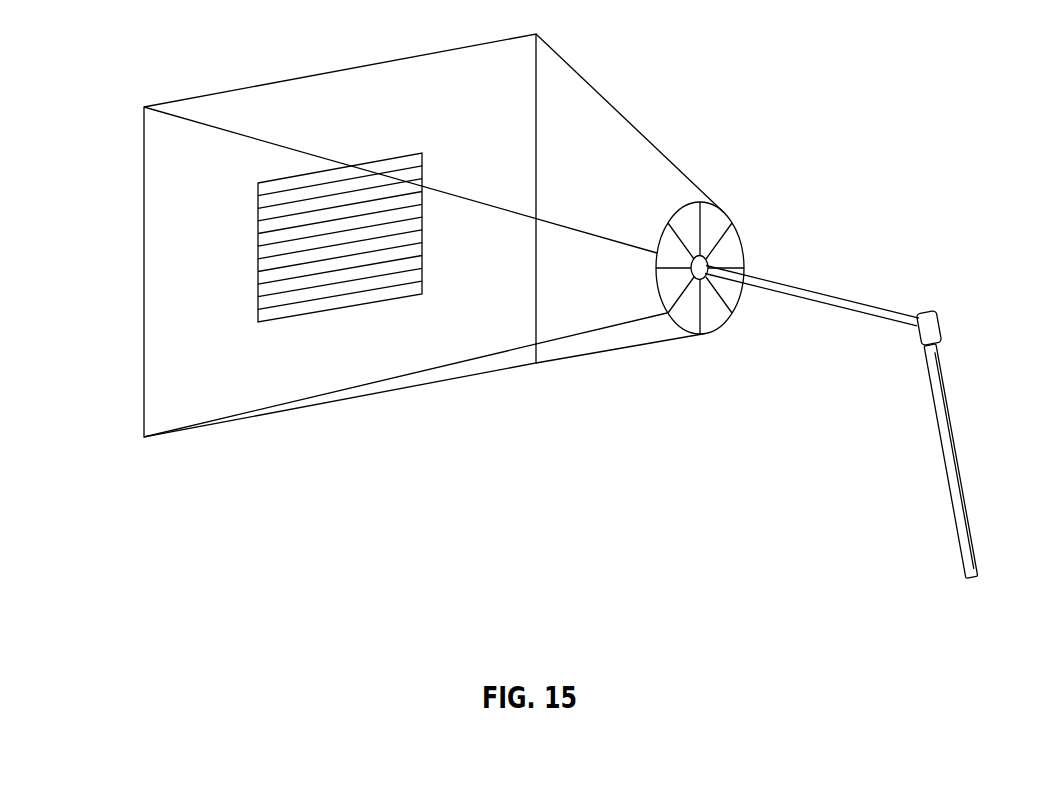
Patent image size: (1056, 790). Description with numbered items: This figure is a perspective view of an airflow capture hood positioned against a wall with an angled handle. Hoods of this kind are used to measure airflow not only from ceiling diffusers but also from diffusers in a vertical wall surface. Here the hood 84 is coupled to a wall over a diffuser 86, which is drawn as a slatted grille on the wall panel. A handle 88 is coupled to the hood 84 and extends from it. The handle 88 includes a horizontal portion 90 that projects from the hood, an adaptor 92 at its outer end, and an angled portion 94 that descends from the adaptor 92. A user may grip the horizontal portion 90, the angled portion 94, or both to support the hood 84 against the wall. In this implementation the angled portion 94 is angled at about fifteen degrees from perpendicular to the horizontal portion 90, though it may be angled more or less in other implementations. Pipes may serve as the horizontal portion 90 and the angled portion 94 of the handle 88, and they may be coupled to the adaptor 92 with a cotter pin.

The hood 84 is at (637, 130).
The diffuser 86 is at (295, 303).
The handle 88 is at (850, 312).
The horizontal portion 90 is at (768, 283).
The adaptor 92 is at (941, 330).
The angled portion 94 is at (952, 478).